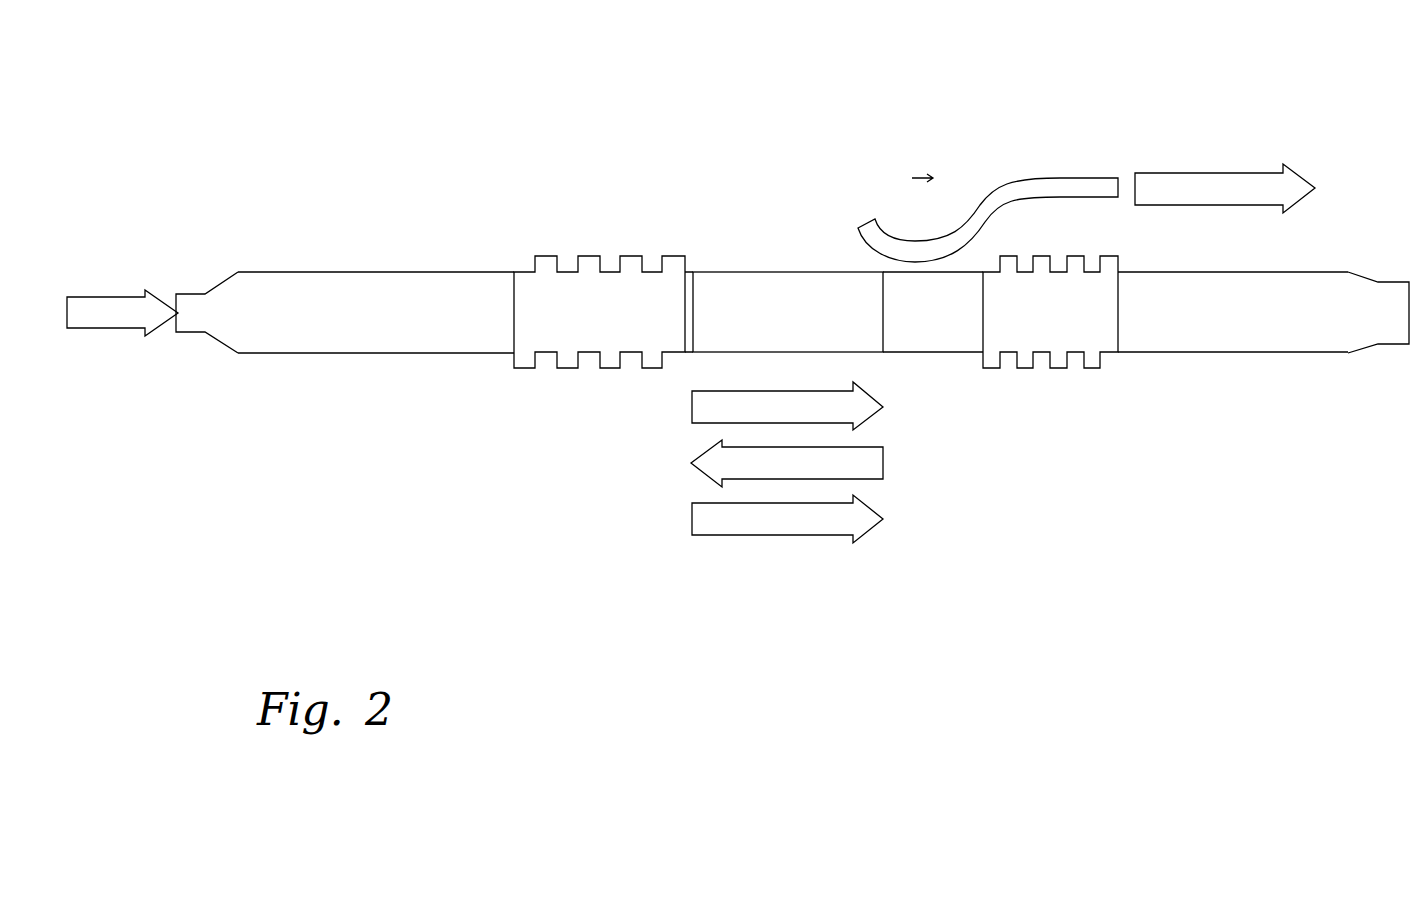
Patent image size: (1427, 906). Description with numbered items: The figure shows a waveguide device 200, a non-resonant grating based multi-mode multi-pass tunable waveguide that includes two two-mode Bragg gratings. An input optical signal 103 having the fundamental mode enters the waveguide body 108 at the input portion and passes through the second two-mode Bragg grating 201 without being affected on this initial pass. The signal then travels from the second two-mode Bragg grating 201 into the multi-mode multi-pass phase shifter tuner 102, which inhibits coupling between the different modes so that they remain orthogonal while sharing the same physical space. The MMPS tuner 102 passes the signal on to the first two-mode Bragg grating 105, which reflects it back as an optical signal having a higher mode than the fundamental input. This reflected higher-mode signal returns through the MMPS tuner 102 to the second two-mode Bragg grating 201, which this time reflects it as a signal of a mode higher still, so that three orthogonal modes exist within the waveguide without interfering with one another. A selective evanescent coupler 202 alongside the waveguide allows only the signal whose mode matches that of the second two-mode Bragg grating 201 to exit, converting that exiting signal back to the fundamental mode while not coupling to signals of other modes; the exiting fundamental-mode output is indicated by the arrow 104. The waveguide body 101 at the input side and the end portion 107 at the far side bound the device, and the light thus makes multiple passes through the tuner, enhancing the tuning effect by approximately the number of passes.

The waveguide device 200 is at (183, 108).
The waveguide body 101 is at (198, 318).
The multi-mode multi-pass phase shifter (MMPS) tuner 102 is at (780, 288).
The input optical signal 103 is at (87, 296).
The output TE0 mode 104 is at (1177, 172).
The first two-mode Bragg grating 105 is at (1025, 343).
The end portion 107 is at (1368, 317).
The waveguide body 108 is at (403, 337).
The second two-mode Bragg grating 201 is at (568, 343).
The selective evanescent coupler 202 is at (923, 248).